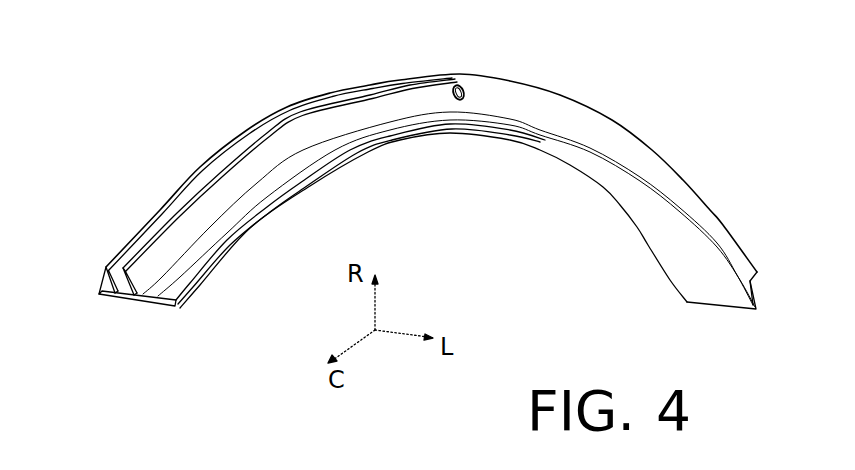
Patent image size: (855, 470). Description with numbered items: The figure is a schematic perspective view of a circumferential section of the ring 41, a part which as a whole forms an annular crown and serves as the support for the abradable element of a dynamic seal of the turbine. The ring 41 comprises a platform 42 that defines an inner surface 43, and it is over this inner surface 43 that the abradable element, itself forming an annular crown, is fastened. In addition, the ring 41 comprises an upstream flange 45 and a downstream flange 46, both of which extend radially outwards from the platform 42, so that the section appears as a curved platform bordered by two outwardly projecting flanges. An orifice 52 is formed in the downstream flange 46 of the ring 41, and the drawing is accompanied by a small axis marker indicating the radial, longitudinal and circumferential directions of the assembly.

The ring 41 is at (192, 157).
The platform 42 is at (100, 298).
The inner surface 43 is at (666, 234).
The upstream flange 45 is at (143, 218).
The downstream flange 46 is at (312, 136).
The orifice 52 is at (468, 86).